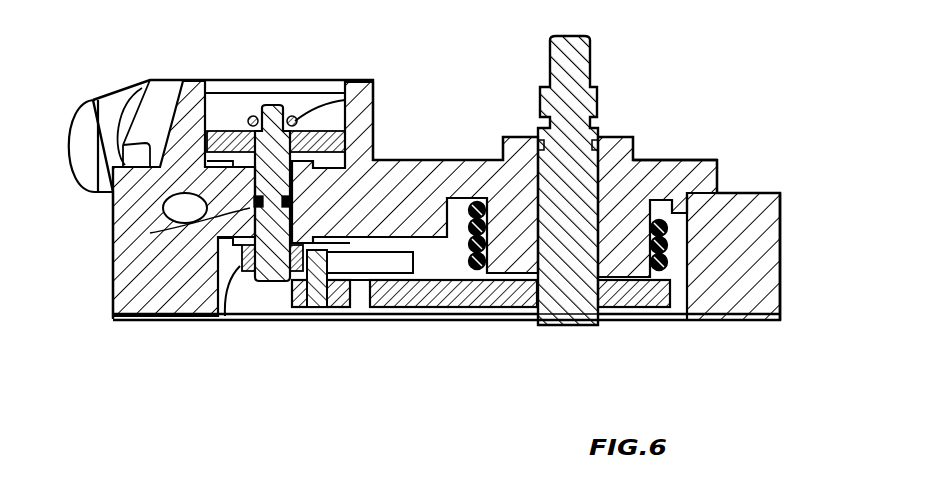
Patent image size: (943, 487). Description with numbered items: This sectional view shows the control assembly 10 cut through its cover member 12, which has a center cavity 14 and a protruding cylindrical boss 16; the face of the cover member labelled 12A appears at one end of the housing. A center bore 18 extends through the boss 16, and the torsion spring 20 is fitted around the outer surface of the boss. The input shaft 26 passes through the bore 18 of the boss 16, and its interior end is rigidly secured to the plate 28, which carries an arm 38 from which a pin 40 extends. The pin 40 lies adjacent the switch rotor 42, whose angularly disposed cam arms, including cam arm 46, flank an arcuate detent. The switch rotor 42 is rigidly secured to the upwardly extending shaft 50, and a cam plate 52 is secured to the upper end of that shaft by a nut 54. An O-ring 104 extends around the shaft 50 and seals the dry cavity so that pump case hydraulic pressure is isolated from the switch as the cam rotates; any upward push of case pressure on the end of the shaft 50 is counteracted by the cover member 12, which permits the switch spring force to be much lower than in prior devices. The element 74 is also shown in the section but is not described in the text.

The control assembly 10 is at (462, 195).
The cover member 12 is at (688, 162).
The housing end face 12A is at (783, 202).
The center cavity 14 is at (462, 275).
The cylindrical boss 16 is at (680, 178).
The center bore 18 is at (598, 318).
The torsion spring 20 is at (667, 240).
The input shaft 26 is at (540, 117).
The plate 28 is at (443, 318).
The arm 38 is at (362, 318).
The pin 40 is at (333, 320).
The switch rotor 42 is at (235, 316).
The cam arm 46 is at (370, 257).
The shaft 50 is at (283, 117).
The cam plate 52 is at (345, 130).
The nut 54 is at (372, 87).
The pin 74 is at (350, 320).
The O-ring 104 is at (150, 233).